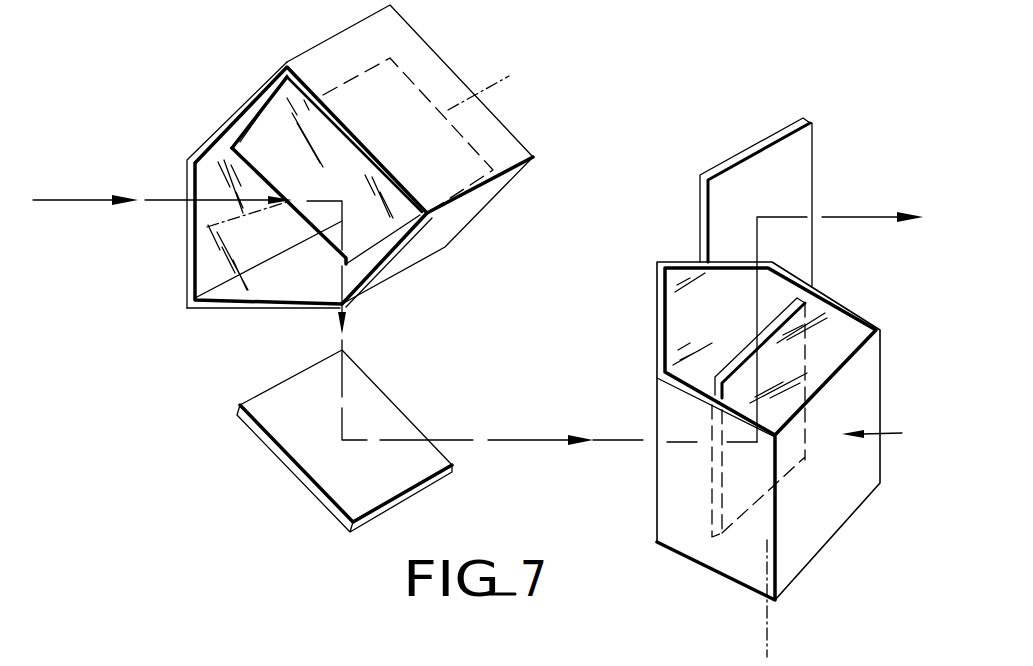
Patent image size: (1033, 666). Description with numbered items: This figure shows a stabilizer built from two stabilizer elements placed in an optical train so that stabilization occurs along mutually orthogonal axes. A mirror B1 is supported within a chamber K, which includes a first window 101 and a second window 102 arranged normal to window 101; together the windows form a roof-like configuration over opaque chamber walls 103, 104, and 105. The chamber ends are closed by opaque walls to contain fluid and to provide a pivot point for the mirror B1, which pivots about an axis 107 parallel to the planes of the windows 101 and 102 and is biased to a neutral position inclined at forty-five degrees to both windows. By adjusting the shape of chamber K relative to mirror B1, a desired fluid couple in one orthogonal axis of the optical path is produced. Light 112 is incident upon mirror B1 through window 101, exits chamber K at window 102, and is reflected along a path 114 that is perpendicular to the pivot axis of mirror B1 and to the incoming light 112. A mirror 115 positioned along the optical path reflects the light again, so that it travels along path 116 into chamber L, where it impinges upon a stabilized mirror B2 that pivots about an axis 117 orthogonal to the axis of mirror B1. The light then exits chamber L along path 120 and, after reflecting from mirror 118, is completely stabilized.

The first window 101 is at (187, 272).
The second window 102 is at (255, 308).
The opaque chamber wall 103 is at (213, 133).
The opaque chamber wall 104 is at (410, 122).
The opaque chamber wall 105 is at (400, 248).
The pivot axis 107 is at (257, 224).
The incident light 112 is at (83, 200).
The reflected light path 114 is at (343, 343).
The mirror 115 is at (287, 467).
The light path 116 is at (533, 443).
The pivot axis 117 is at (767, 625).
The mirror 118 is at (758, 142).
The exit light path 120 is at (867, 215).
The mirror B1 is at (268, 115).
The stabilized mirror B2 is at (737, 353).
The chamber K is at (432, 78).
The chamber L is at (882, 431).